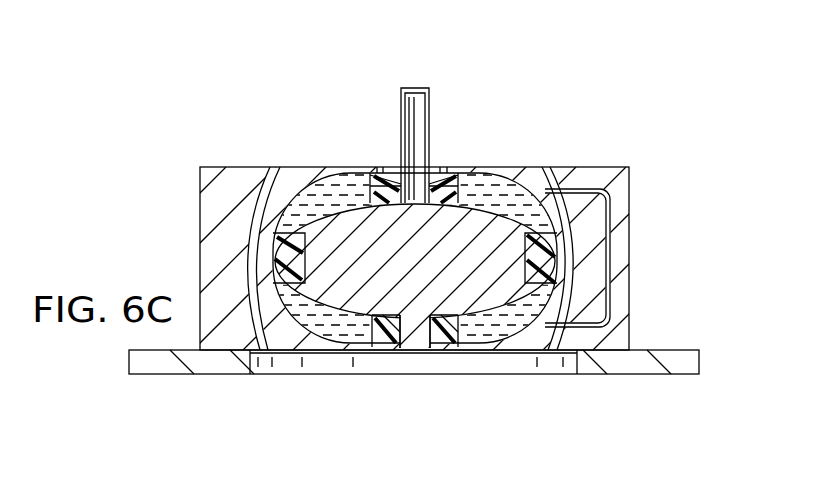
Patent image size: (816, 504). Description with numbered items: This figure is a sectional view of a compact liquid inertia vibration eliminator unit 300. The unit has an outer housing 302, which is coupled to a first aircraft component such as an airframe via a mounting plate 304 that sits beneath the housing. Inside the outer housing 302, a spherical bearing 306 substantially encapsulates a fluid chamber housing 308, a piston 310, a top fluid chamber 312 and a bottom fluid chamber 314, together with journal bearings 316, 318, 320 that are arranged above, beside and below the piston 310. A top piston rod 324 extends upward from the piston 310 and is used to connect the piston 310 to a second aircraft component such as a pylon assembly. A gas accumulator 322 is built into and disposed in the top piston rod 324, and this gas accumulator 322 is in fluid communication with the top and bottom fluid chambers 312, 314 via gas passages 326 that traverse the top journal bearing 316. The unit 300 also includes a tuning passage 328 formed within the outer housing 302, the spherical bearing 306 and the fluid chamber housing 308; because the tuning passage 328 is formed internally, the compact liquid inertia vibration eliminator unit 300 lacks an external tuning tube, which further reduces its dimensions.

The compact liquid inertia vibration eliminator unit 300 is at (246, 118).
The outer housing 302 is at (200, 212).
The mounting plate 304 is at (160, 375).
The spherical bearing 306 is at (560, 178).
The fluid chamber housing 308 is at (520, 176).
The piston 310 is at (476, 288).
The top fluid chamber 312 is at (345, 185).
The bottom fluid chamber 314 is at (307, 340).
The top journal bearing 316 is at (388, 180).
The journal bearing 318 is at (277, 277).
The journal bearing 320 is at (387, 323).
The gas accumulator 322 is at (412, 88).
The top piston rod 324 is at (402, 114).
The gas passages 326 is at (441, 180).
The tuning passage 328 is at (608, 228).